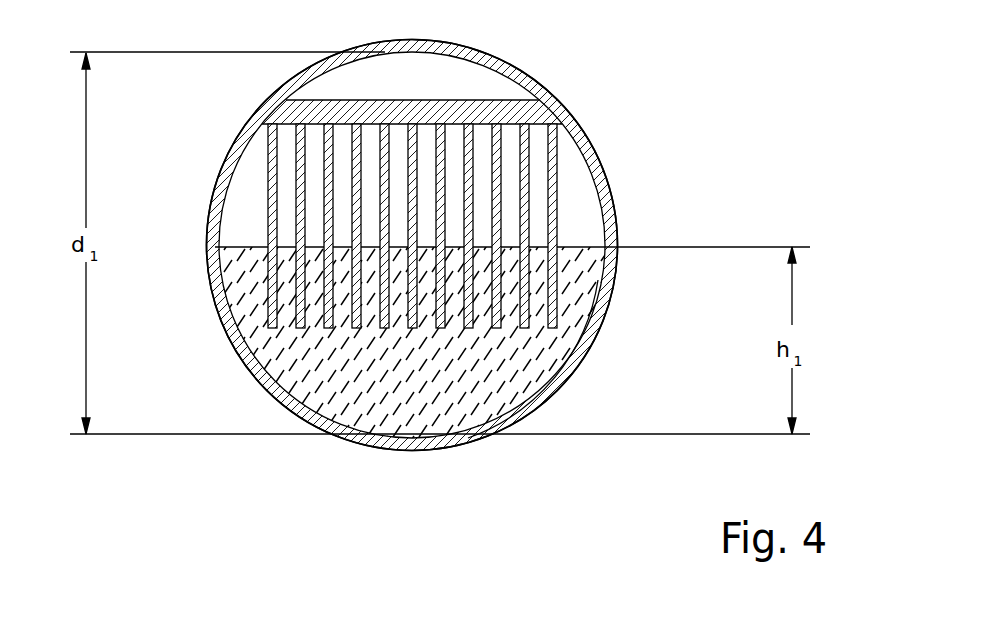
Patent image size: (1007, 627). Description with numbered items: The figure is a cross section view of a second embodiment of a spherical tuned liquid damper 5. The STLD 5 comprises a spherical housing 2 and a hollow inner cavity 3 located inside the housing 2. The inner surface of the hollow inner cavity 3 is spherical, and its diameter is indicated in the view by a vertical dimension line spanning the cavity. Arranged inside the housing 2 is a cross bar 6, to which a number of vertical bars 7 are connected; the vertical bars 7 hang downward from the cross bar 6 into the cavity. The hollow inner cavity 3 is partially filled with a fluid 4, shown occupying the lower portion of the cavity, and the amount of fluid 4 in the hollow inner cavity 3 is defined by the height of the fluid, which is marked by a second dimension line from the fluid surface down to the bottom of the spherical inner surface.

The spherical housing 2 is at (582, 112).
The hollow inner cavity 3 is at (215, 213).
The fluid 4 is at (560, 247).
The spherical tuned liquid damper 5 is at (589, 58).
The cross bar 6 is at (343, 117).
The vertical bars 7 is at (268, 158).